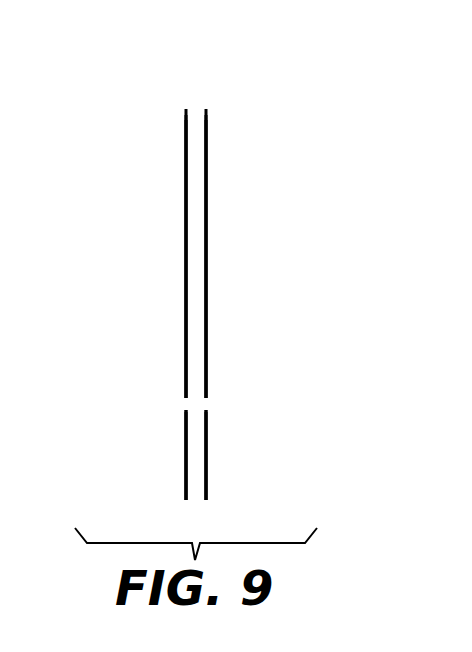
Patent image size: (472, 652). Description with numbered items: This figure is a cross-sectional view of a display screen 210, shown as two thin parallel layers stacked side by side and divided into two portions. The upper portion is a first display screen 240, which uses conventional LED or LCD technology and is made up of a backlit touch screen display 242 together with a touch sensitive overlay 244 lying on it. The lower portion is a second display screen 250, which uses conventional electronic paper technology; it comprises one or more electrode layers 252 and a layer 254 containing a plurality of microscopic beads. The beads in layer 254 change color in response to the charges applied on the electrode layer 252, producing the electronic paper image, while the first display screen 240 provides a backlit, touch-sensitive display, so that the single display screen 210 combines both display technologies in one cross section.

The display screen 210 is at (150, 78).
The first display screen 240 is at (160, 275).
The backlit touch screen display 242 is at (188, 240).
The touch sensitive overlay 244 is at (208, 275).
The second display screen 250 is at (160, 477).
The electrode layer 252 is at (188, 442).
The layer comprising a plurality of microscopic beads 254 is at (208, 477).